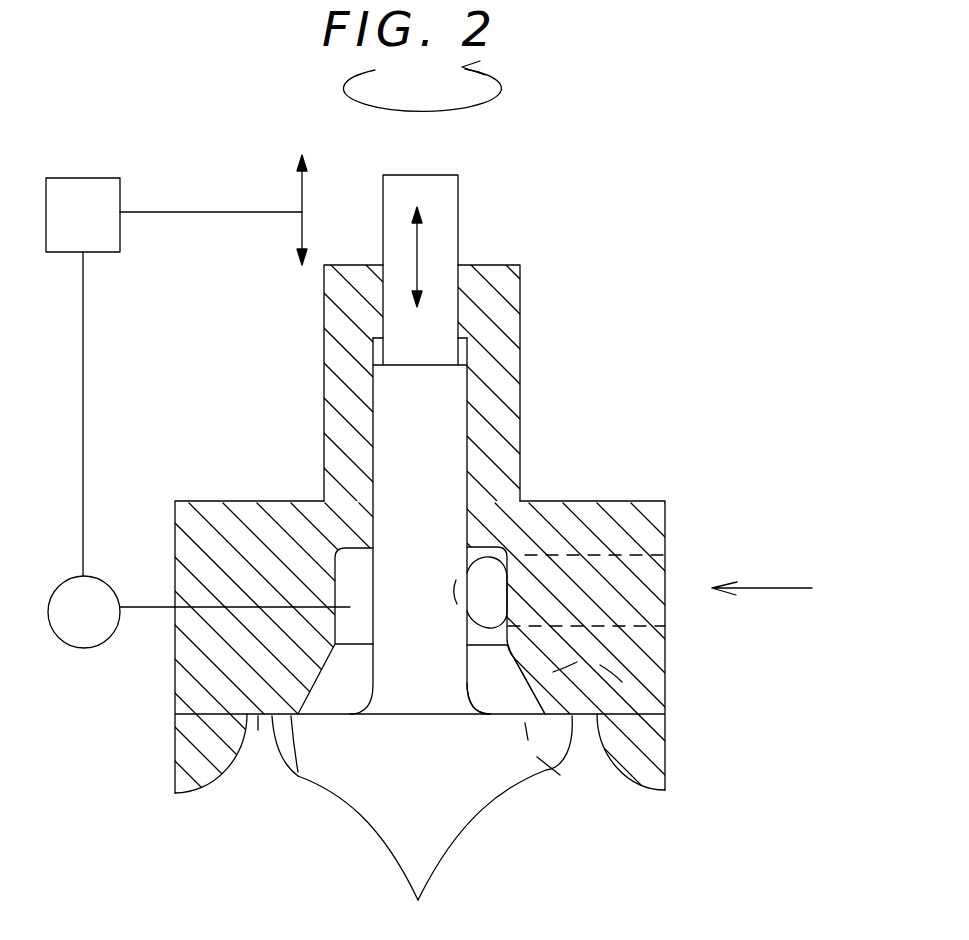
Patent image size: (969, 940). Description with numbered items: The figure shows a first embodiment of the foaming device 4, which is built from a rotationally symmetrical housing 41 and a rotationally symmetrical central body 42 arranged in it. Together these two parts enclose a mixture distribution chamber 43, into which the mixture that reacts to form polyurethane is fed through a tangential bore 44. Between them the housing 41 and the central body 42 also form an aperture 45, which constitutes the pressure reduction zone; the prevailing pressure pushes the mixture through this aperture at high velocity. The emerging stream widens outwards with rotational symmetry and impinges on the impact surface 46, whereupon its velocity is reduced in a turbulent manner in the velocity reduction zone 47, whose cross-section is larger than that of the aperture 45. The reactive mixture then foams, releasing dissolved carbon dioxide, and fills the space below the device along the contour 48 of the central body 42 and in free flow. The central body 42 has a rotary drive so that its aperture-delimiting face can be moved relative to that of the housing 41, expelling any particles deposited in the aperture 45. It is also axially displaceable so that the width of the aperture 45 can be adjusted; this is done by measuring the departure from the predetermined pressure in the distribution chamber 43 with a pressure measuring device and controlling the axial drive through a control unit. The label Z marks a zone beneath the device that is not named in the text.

The foaming device 4 is at (685, 468).
The housing 41 is at (505, 378).
The central body 42 is at (478, 793).
The mixture distribution chamber 43 is at (501, 691).
The tangential bore 44 is at (655, 582).
The aperture 45 is at (297, 778).
The impact surface 46 is at (247, 717).
The velocity reduction zone 47 is at (258, 728).
The contour 48 is at (377, 832).
The reaction zone Z is at (612, 773).